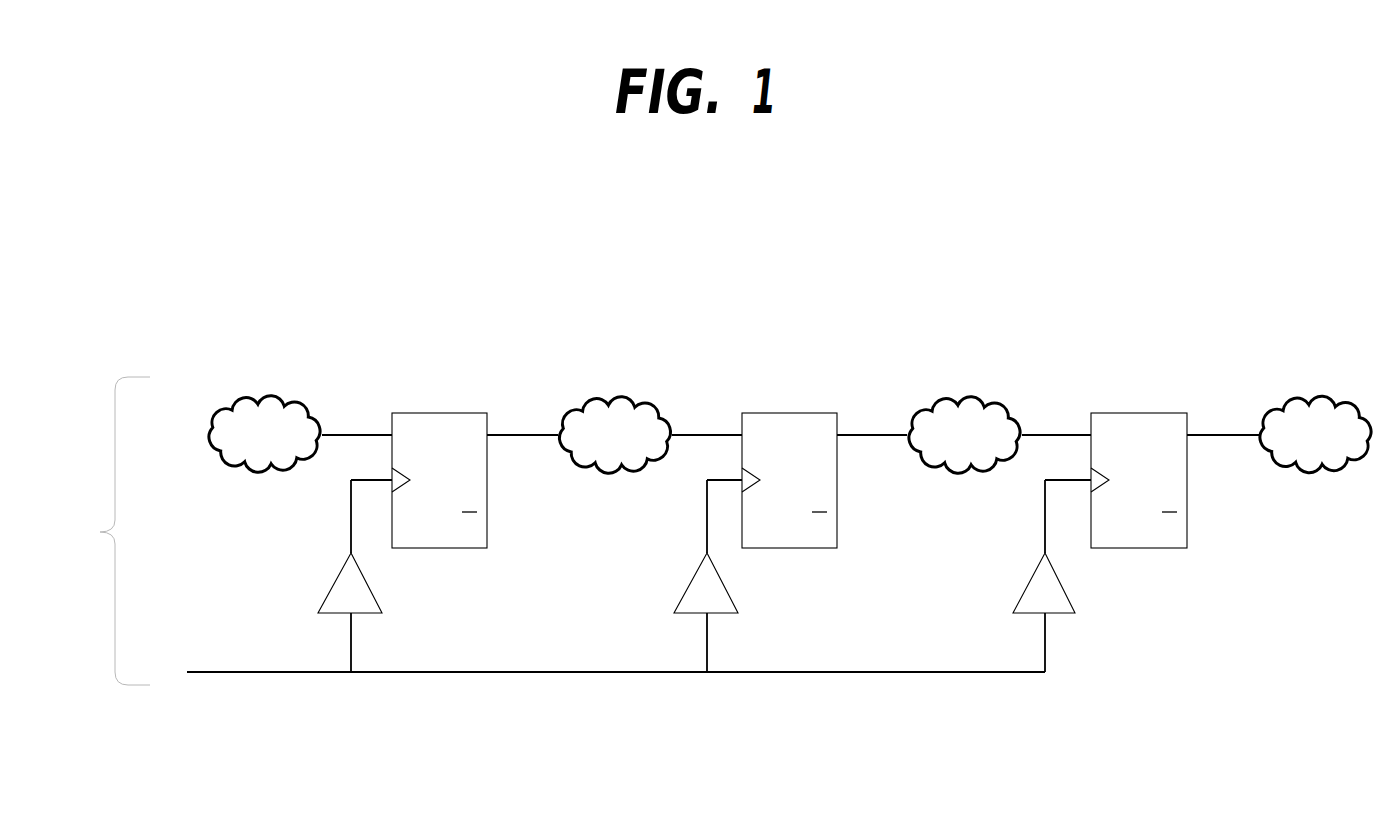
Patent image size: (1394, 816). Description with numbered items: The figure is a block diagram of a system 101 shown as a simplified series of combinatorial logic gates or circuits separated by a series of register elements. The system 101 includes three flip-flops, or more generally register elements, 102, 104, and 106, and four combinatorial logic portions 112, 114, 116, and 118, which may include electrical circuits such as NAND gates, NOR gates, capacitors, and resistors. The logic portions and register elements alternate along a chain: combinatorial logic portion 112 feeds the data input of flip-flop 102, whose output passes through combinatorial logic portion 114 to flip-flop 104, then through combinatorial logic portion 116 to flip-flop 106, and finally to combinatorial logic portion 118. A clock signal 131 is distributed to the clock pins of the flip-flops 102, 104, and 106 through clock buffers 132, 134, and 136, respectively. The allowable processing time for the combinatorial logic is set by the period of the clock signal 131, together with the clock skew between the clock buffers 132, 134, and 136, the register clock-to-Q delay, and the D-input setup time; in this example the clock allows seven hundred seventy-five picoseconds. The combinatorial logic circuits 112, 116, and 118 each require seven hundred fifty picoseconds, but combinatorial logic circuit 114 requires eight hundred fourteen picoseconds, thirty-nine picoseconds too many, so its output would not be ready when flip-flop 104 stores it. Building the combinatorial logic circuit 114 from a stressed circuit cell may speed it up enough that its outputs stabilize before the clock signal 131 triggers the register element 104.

The system 101 is at (86, 542).
The flip-flop 102 is at (460, 492).
The flip-flop 104 is at (805, 492).
The flip-flop 106 is at (1158, 492).
The combinatorial logic portion 112 is at (247, 431).
The combinatorial logic portion 114 is at (597, 431).
The combinatorial logic portion 116 is at (947, 431).
The combinatorial logic portion 118 is at (1299, 430).
The clock signal 131 is at (196, 666).
The clock buffer 132 is at (334, 608).
The clock buffer 134 is at (690, 608).
The clock buffer 136 is at (1028, 608).